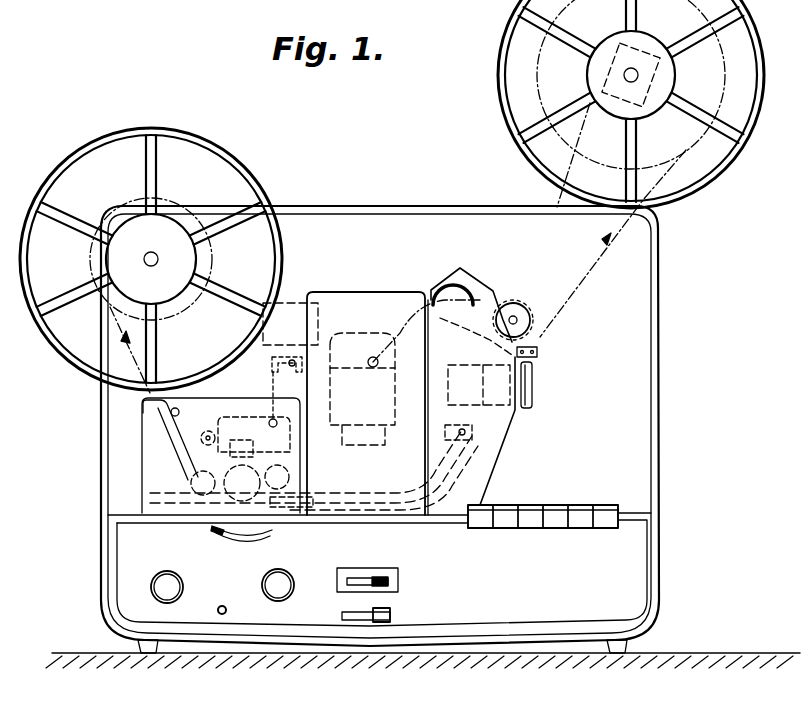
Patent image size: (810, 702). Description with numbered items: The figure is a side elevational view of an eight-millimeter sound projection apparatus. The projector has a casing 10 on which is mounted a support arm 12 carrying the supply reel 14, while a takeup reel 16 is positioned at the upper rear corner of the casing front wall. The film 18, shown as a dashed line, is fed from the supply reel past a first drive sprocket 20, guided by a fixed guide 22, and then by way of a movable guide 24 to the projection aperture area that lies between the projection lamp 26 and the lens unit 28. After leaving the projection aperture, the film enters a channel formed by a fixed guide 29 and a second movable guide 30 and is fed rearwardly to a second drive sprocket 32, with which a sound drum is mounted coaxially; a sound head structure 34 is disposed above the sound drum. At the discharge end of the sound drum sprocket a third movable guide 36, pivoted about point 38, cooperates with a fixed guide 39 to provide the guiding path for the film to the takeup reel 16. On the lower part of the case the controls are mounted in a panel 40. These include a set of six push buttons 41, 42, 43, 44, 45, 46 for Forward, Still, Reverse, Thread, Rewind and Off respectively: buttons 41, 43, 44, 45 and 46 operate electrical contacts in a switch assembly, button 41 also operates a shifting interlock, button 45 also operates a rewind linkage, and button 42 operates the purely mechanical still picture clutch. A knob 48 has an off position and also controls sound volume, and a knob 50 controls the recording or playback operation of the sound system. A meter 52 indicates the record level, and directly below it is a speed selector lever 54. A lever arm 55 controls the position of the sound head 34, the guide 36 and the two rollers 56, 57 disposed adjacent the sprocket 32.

The casing 10 is at (372, 206).
The support arm 12 is at (553, 204).
The supply reel 14 is at (501, 42).
The takeup reel 16 is at (221, 146).
The film 18 is at (606, 243).
The first drive sprocket 20 is at (519, 302).
The fixed guide 22 is at (538, 350).
The movable guide 24 is at (478, 276).
The projection lamp 26 is at (374, 357).
The lens unit 28 is at (535, 396).
The fixed guide 29 is at (314, 470).
The second movable guide 30 is at (435, 470).
The second drive sprocket 32 is at (262, 402).
The sound head structure 34 is at (238, 431).
The third movable guide 36 is at (165, 470).
The pivot point 38 is at (147, 413).
The fixed guide 39 is at (176, 408).
The panel 40 is at (633, 586).
The push button 41 is at (480, 528).
The push button 42 is at (505, 528).
The push button 43 is at (530, 528).
The push button 44 is at (555, 528).
The push button 45 is at (580, 528).
The push button 46 is at (605, 528).
The knob 48 is at (162, 590).
The knob 50 is at (279, 594).
The meter 52 is at (388, 582).
The speed selector lever 54 is at (380, 622).
The lever arm 55 is at (212, 540).
The roller 56 is at (290, 476).
The roller 57 is at (190, 495).